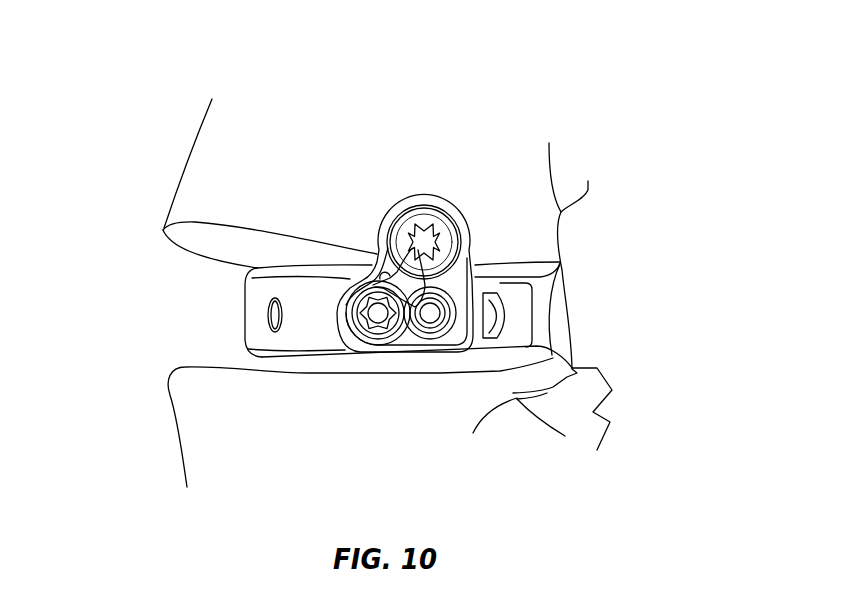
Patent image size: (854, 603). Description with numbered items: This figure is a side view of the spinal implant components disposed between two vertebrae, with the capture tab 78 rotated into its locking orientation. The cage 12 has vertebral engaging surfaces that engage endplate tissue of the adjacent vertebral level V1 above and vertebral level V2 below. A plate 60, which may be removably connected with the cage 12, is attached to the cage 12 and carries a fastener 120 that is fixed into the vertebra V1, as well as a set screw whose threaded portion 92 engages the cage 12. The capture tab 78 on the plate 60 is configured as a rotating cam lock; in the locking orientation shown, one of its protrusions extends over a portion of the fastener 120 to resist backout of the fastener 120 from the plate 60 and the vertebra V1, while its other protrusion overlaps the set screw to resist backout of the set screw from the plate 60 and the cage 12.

The cage 12 is at (532, 308).
The plate 60 is at (428, 238).
The capture tab 78 is at (360, 327).
The portion 92 is at (428, 313).
The fastener 120 is at (428, 240).
The vertebral level V1 is at (488, 135).
The vertebral level V2 is at (445, 457).